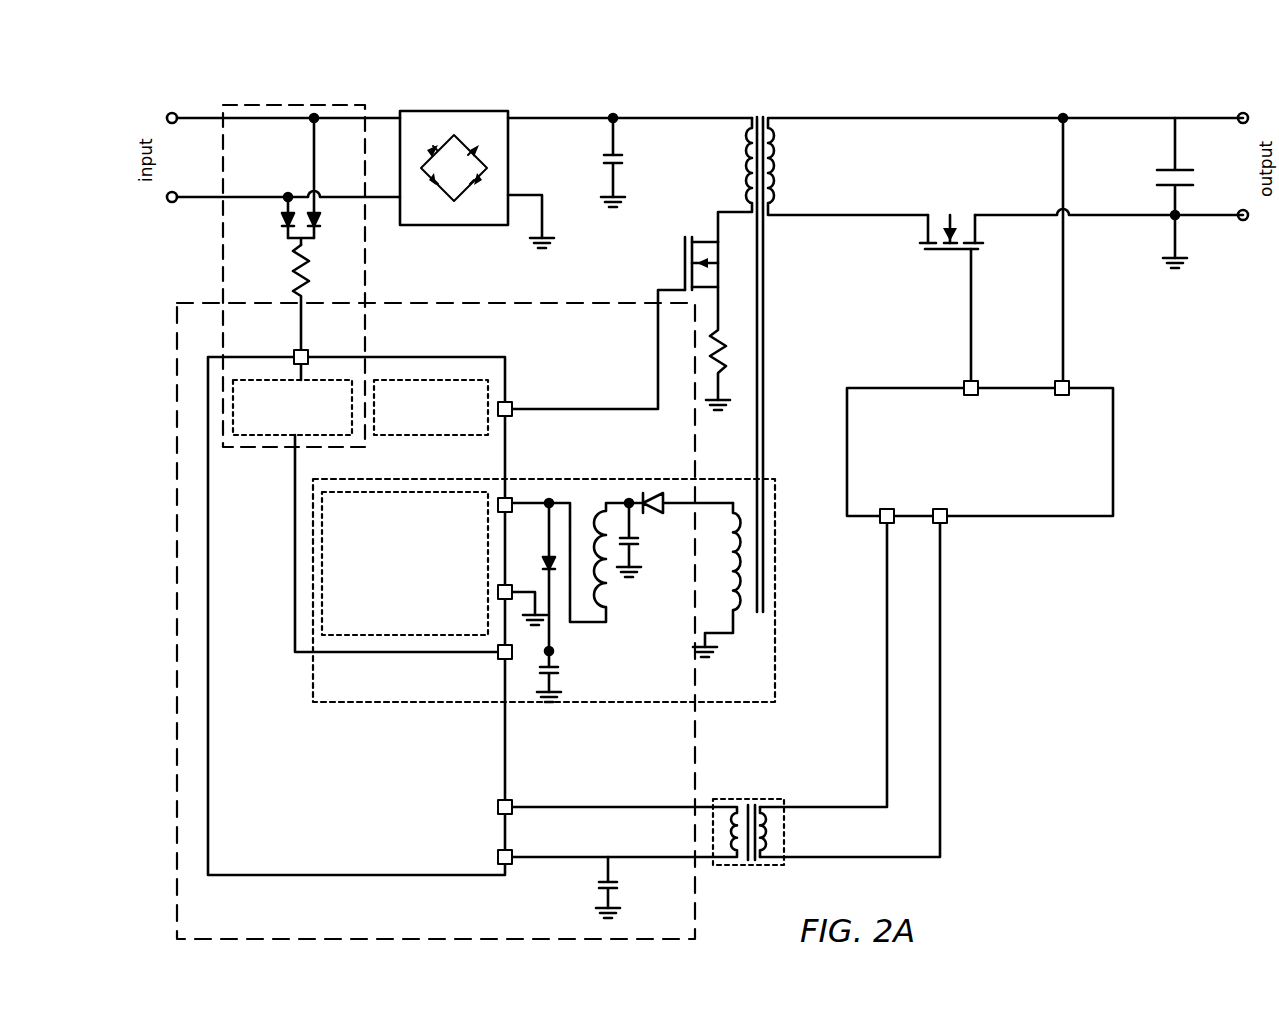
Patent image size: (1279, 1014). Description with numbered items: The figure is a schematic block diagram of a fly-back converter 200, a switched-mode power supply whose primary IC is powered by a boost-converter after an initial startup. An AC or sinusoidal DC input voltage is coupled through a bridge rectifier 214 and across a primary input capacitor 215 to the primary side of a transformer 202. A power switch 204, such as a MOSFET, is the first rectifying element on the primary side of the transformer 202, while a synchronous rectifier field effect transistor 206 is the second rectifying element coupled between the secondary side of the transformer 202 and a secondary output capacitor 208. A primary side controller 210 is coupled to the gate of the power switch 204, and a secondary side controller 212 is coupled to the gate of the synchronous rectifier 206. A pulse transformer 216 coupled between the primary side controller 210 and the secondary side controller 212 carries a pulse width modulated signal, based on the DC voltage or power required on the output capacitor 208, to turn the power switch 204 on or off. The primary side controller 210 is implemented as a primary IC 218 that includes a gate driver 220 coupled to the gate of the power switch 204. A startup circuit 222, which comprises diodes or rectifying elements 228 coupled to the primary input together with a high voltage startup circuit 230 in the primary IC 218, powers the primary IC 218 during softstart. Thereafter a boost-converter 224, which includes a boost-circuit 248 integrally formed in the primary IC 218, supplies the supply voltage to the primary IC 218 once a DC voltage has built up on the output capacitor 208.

The fly-back converter 200 is at (632, 42).
The transformer 202 is at (760, 103).
The power switch 204 is at (693, 220).
The synchronous rectifier field effect transistor 206 is at (942, 203).
The secondary output capacitor 208 is at (1210, 156).
The primary side controller 210 is at (440, 341).
The secondary side controller 212 is at (1000, 466).
The bridge rectifier 214 is at (455, 225).
The primary input capacitor 215 is at (605, 164).
The pulse transformer 216 is at (741, 795).
The primary IC 218 is at (376, 852).
The gate driver 220 is at (417, 430).
The startup circuit 222 is at (223, 258).
The boost-converter 224 is at (617, 705).
The rectifying elements 228 is at (287, 240).
The high voltage startup circuit 230 is at (278, 430).
The boost-circuit 248 is at (383, 602).